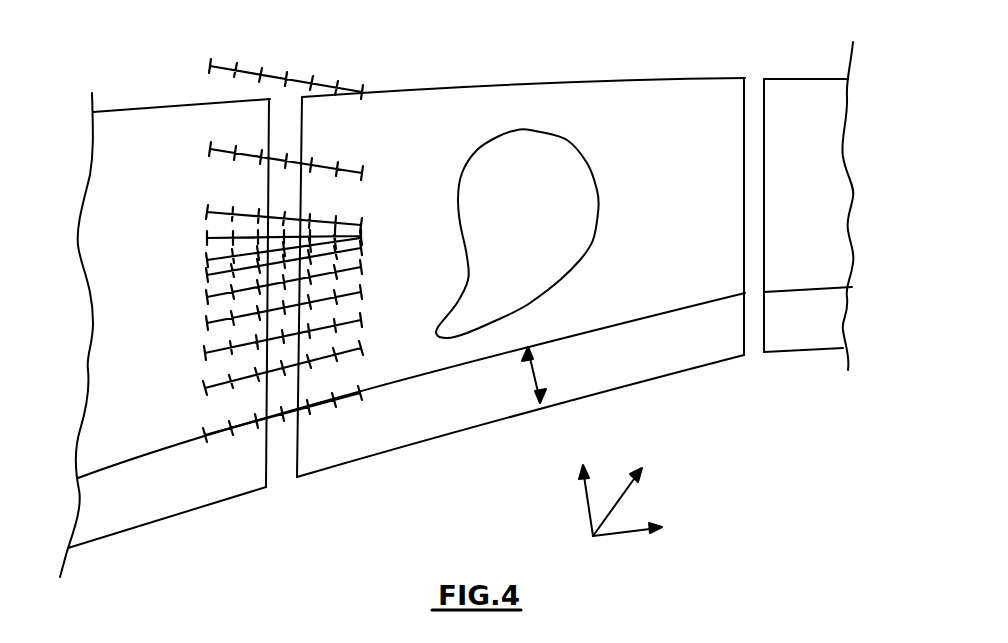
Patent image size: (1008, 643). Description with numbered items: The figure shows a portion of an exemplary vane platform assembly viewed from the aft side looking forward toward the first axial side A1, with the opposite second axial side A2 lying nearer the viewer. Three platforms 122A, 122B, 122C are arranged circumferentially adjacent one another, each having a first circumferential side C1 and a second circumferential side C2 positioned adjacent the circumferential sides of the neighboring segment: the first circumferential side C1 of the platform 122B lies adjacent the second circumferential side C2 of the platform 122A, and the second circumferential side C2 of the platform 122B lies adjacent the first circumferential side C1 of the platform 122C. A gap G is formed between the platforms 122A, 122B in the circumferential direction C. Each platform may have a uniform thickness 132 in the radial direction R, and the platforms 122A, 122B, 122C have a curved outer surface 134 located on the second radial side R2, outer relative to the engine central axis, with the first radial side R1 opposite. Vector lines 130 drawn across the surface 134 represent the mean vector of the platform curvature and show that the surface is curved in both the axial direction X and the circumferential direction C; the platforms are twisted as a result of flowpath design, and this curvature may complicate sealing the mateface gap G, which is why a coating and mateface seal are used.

The platform 122A is at (128, 150).
The platform 122B is at (632, 288).
The platform 122C is at (808, 267).
The vector lines 130 is at (290, 367).
The thickness 132 is at (540, 377).
The outer surface 134 is at (403, 380).
The first axial side A1 is at (150, 107).
The second axial side A2 is at (193, 487).
The first circumferential side C1 is at (302, 115).
The second circumferential side C2 is at (270, 115).
The first radial side R1 is at (132, 528).
The second radial side R2 is at (203, 440).
The gap G is at (283, 460).
The radial direction R is at (584, 484).
The axial direction X is at (625, 489).
The circumferential direction C is at (637, 527).